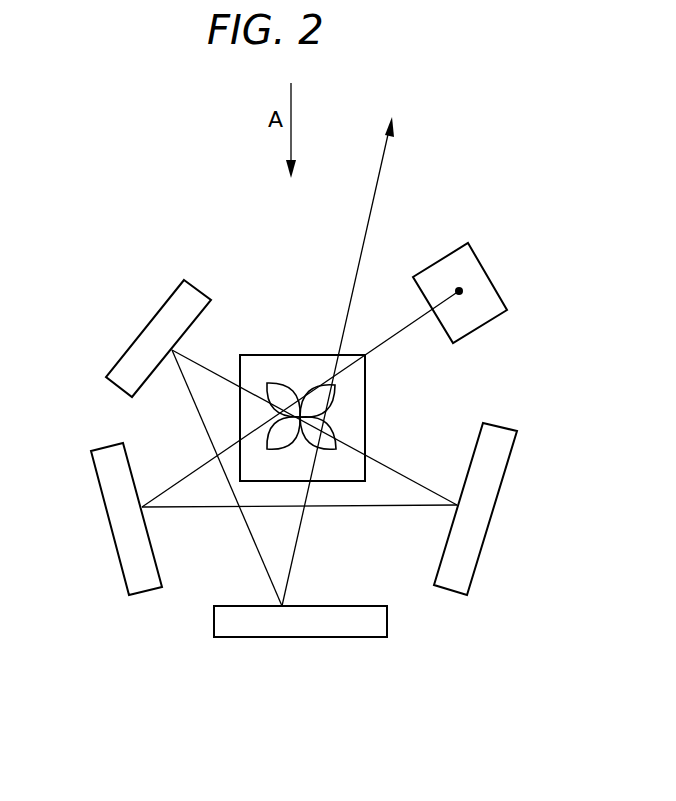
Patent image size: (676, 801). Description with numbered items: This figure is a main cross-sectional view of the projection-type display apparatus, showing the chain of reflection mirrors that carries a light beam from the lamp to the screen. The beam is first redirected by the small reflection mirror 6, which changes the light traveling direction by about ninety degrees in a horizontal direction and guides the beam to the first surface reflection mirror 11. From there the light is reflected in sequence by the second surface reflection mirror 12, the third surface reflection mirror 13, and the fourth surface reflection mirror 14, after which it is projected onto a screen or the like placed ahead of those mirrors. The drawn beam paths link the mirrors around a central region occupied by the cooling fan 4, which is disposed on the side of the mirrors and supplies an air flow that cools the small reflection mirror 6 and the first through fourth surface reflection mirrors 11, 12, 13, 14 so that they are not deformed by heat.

The cooling fan 4 is at (282, 360).
The small reflection mirror 6 is at (472, 262).
The first surface reflection mirror 11 is at (123, 540).
The second surface reflection mirror 12 is at (470, 548).
The third surface reflection mirror 13 is at (170, 312).
The fourth surface reflection mirror 14 is at (348, 625).